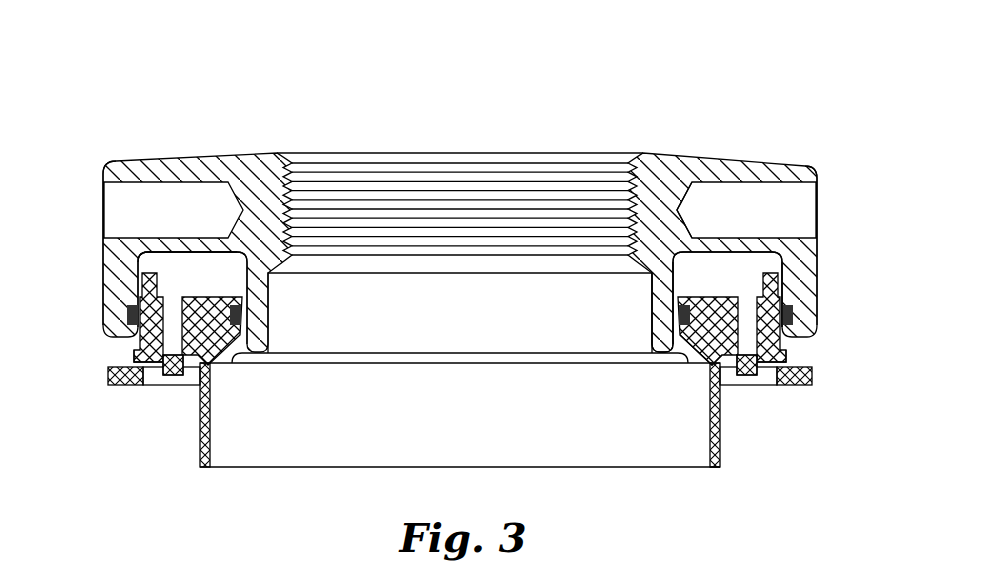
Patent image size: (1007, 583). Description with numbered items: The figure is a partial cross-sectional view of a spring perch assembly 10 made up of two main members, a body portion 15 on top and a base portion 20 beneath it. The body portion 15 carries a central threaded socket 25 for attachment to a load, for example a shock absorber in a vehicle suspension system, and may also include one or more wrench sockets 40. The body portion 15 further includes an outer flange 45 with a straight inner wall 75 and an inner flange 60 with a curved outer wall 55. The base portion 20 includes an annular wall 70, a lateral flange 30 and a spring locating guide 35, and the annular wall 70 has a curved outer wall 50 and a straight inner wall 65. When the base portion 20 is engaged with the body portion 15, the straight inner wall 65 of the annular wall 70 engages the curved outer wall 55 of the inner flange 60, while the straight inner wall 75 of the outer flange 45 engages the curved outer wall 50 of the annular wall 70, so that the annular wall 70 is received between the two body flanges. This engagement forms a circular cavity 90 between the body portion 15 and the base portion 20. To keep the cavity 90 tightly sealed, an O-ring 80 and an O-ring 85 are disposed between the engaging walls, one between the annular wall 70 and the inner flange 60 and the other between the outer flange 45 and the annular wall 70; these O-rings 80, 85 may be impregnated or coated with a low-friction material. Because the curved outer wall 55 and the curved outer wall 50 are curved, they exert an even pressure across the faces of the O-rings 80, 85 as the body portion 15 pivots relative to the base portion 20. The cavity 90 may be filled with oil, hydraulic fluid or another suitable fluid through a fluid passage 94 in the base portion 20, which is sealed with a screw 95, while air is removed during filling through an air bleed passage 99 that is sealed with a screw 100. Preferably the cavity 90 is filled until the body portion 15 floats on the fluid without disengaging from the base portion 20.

The spring perch assembly 10 is at (636, 82).
The body portion 15 is at (742, 160).
The base portion 20 is at (722, 430).
The threaded socket 25 is at (546, 153).
The lateral flange 30 is at (794, 387).
The spring locating guide 35 is at (727, 462).
The wrench socket 40 is at (103, 207).
The outer flange 45 is at (781, 354).
The curved outer wall 50 is at (778, 366).
The curved outer wall 55 is at (678, 288).
The inner flange 60 is at (662, 346).
The straight inner wall 65 is at (678, 328).
The annular wall 70 is at (190, 297).
The straight inner wall 75 is at (787, 334).
The O-ring 80 is at (130, 313).
The O-ring 85 is at (240, 356).
The circular cavity 90 is at (190, 262).
The fluid passage 94 is at (712, 372).
The screw 95 is at (742, 377).
The air bleed passage 99 is at (137, 336).
The screw 100 is at (175, 377).